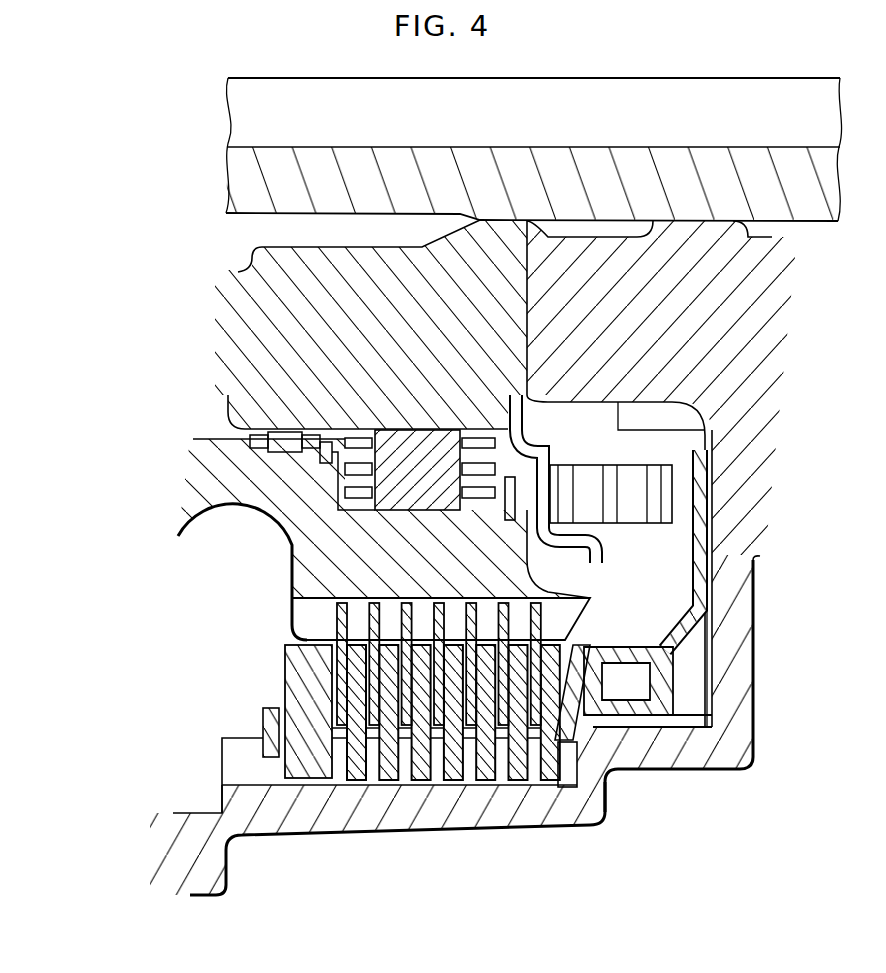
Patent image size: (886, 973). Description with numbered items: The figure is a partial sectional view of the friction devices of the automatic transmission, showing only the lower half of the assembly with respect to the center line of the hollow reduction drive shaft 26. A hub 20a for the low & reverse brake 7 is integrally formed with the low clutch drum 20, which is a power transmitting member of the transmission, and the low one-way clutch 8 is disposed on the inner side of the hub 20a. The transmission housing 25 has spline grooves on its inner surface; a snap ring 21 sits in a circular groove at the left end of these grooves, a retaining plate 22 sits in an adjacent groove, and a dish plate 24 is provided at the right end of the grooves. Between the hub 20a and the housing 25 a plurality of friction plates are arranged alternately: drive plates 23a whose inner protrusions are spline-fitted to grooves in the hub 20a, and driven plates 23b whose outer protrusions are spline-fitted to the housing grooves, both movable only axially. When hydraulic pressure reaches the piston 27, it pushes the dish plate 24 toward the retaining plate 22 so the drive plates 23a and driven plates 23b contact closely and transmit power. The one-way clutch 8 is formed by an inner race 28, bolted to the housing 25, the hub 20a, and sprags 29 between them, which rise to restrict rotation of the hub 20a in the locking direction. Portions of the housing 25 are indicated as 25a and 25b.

The low & reverse brake 7 is at (344, 740).
The low one-way clutch 8 is at (262, 447).
The low clutch drum 20 is at (198, 482).
The hub 20a is at (298, 577).
The snap ring 21 is at (272, 722).
The retaining plate 22 is at (293, 787).
The drive plate 23a is at (341, 726).
The driven plate 23b is at (450, 762).
The dish plate 24 is at (603, 768).
The transmission housing 25 is at (462, 747).
The housing base portion 25a is at (212, 800).
The housing wall portion 25b is at (583, 760).
The hollow reduction drive shaft 26 is at (238, 184).
The piston 27 is at (697, 597).
The inner race 28 is at (222, 346).
The sprags 29 is at (341, 488).